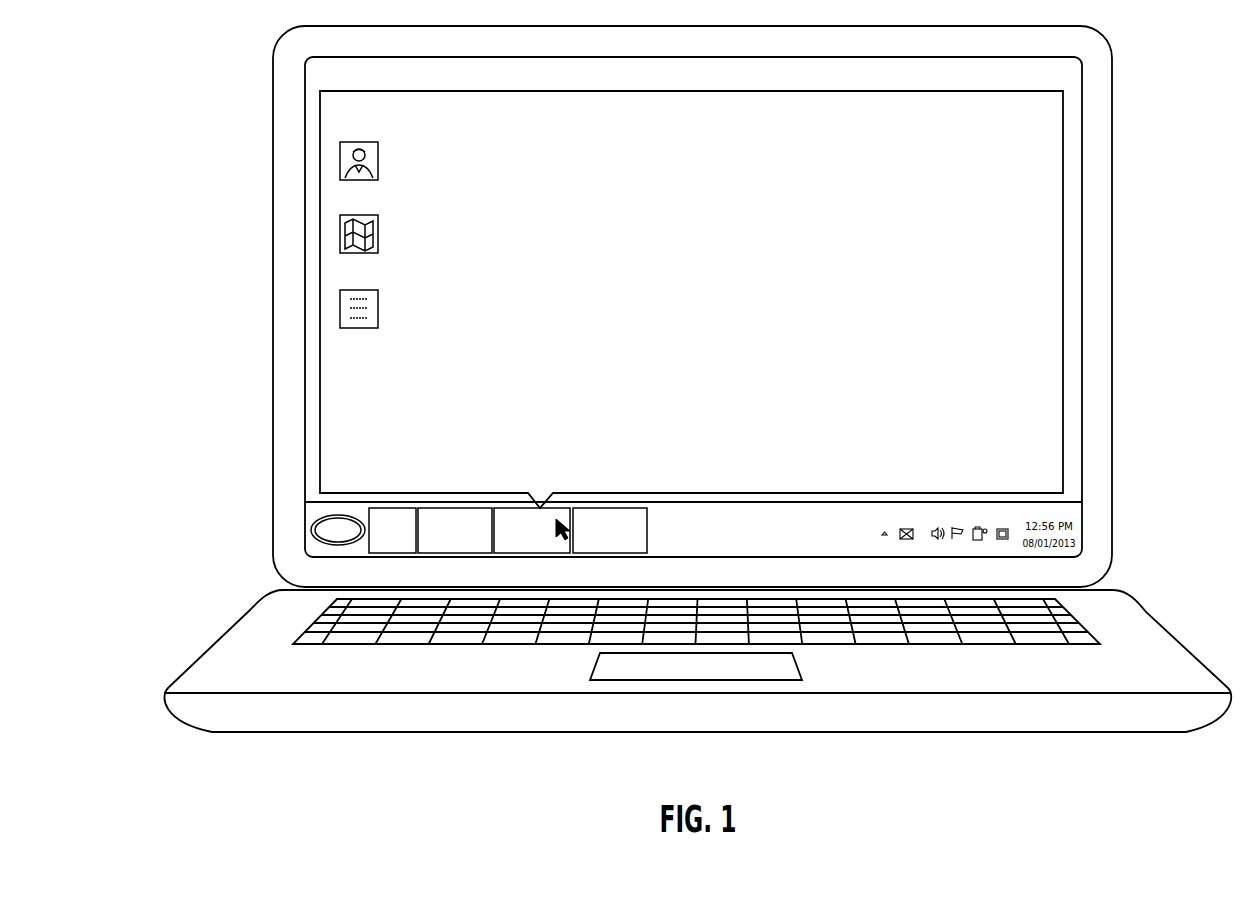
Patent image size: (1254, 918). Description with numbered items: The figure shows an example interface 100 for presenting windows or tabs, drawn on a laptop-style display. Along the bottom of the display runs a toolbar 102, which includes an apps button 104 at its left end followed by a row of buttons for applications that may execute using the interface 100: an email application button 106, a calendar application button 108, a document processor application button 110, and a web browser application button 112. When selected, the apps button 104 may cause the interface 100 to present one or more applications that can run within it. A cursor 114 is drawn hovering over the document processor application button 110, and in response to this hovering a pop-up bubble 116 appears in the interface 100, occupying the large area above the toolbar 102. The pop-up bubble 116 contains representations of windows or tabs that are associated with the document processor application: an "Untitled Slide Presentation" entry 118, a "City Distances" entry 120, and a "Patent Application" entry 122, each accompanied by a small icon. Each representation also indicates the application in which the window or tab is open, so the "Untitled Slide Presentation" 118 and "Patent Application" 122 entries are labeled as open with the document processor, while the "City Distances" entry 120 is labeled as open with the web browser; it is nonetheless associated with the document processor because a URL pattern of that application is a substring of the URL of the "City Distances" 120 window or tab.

The interface 100 is at (387, 56).
The toolbar 102 is at (1083, 540).
The apps button 104 is at (312, 530).
The email application button 106 is at (393, 553).
The calendar application button 108 is at (453, 503).
The document processor application button 110 is at (532, 553).
The web browser application button 112 is at (605, 508).
The cursor 114 is at (567, 515).
The pop-up bubble 116 is at (922, 92).
The "Untitled Slide Presentation" representation 118 is at (975, 148).
The "City Distances" representation 120 is at (655, 213).
The "Patent Application" representation 122 is at (880, 290).